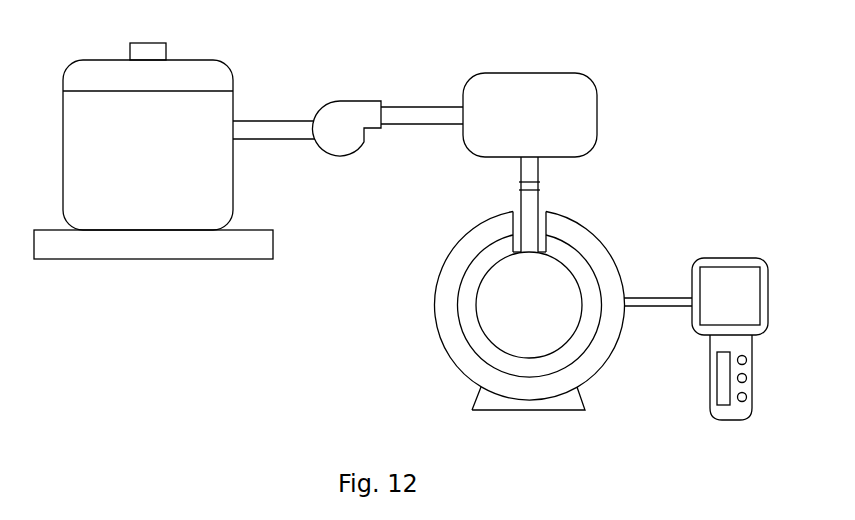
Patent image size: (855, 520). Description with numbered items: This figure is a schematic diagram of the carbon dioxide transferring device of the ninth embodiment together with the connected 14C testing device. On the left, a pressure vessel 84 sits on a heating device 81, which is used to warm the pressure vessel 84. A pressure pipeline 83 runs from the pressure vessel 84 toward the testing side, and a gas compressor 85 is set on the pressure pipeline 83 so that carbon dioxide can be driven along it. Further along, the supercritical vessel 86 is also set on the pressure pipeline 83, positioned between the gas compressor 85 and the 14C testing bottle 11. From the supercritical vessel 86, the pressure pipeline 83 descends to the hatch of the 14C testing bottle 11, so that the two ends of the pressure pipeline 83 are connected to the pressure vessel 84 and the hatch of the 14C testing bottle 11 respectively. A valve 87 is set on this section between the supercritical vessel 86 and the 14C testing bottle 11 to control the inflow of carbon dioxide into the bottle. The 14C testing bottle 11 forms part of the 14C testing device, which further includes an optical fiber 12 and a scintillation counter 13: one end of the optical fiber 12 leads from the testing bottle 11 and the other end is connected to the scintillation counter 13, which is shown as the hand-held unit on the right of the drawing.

The 14C testing bottle 11 is at (463, 353).
The optical fiber 12 is at (640, 300).
The scintillation counter 13 is at (728, 295).
The heating device 81 is at (108, 245).
The pressure pipeline 83 is at (290, 130).
The pressure vessel 84 is at (184, 198).
The gas compressor 85 is at (343, 123).
The supercritical vessel 86 is at (552, 117).
The valve 87 is at (540, 185).